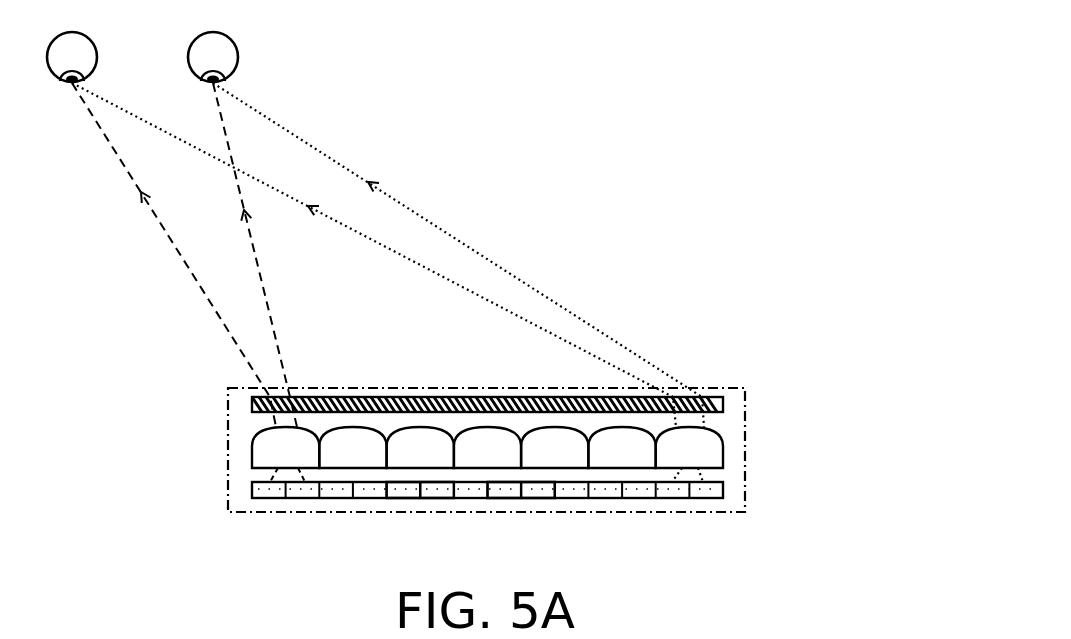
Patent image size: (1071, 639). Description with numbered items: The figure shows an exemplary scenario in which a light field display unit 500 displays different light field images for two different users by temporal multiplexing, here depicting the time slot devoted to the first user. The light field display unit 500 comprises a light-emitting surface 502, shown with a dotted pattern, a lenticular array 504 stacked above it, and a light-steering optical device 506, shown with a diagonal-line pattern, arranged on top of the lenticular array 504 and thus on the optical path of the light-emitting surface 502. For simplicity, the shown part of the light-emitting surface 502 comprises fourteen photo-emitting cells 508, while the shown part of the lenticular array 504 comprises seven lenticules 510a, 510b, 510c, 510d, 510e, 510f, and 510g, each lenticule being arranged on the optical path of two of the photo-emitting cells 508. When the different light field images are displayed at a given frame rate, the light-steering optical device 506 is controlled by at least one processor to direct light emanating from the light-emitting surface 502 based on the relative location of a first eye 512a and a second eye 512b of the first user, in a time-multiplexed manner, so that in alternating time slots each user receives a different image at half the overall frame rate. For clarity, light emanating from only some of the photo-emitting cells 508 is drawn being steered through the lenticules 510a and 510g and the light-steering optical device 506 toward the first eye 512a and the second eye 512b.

The light field display unit 500 is at (740, 388).
The light-emitting surface 502 is at (250, 490).
The lenticular array 504 is at (428, 437).
The light-steering optical device 506 is at (725, 405).
The photo-emitting cells 508 is at (548, 492).
The lenticule 510a is at (314, 464).
The lenticule 510b is at (382, 464).
The lenticule 510c is at (449, 464).
The lenticule 510d is at (517, 464).
The lenticule 510e is at (584, 464).
The lenticule 510f is at (648, 464).
The lenticule 510g is at (719, 464).
The first eye 512a is at (87, 52).
The second eye 512b is at (230, 52).